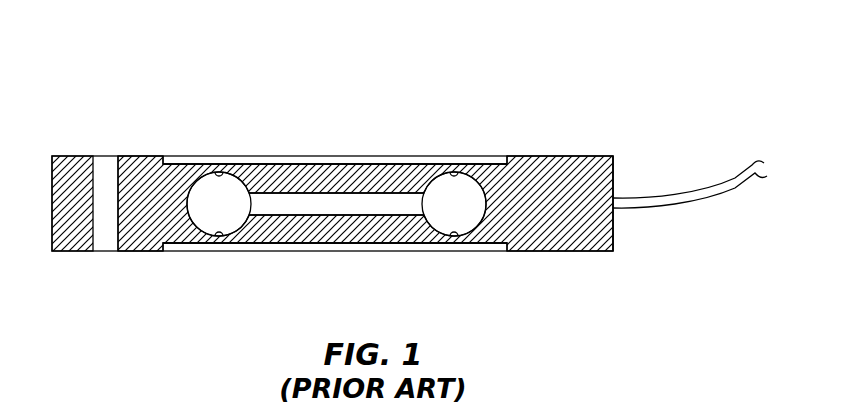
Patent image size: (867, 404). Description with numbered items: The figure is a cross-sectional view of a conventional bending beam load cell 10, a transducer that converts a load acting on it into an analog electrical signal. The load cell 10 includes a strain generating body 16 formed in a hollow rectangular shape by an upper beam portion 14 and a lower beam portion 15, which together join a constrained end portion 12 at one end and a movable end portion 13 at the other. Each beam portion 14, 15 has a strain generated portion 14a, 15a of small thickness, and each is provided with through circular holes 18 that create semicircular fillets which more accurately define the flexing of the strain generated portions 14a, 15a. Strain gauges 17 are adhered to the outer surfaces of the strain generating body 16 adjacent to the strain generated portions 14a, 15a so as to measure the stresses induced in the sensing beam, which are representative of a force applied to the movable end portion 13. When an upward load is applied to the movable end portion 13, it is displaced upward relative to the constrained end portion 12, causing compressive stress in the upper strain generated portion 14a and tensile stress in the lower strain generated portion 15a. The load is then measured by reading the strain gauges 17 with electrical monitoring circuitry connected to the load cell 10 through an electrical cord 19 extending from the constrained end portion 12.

The load cell 10 is at (372, 47).
The constrained end portion 12 is at (556, 190).
The movable end portion 13 is at (135, 161).
The upper beam portion 14 is at (283, 171).
The strain generated portion 14a is at (213, 170).
The lower beam portion 15 is at (311, 240).
The strain generated portion 15a is at (221, 238).
The strain generating body 16 is at (553, 243).
The strain gauges 17 is at (328, 162).
The through circular holes 18 is at (208, 216).
The electrical cord 19 is at (681, 202).